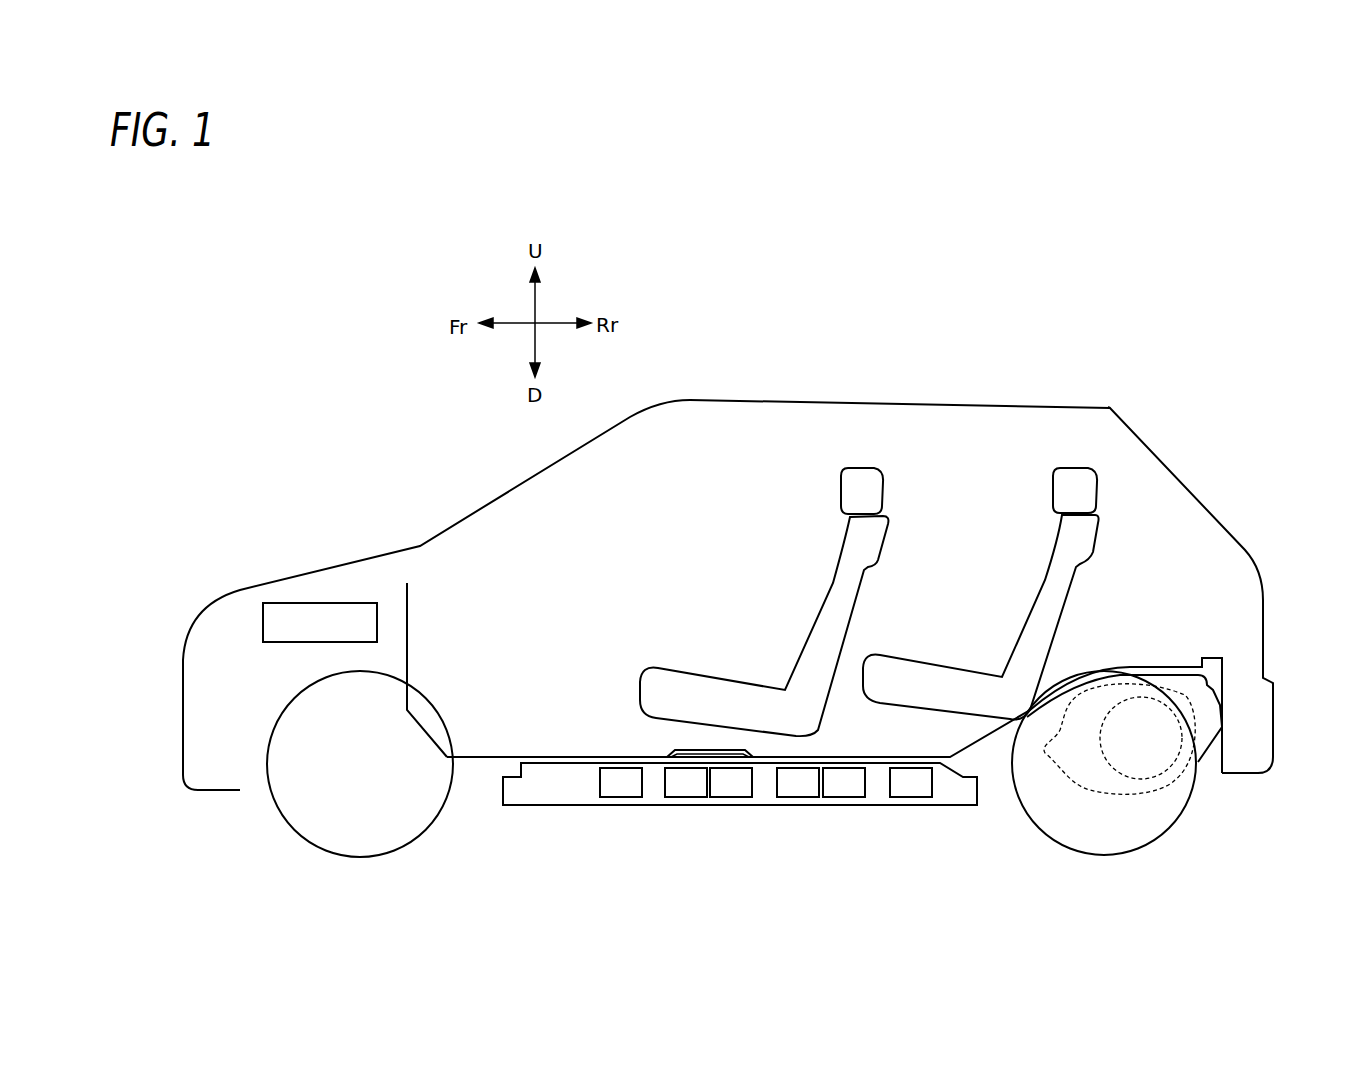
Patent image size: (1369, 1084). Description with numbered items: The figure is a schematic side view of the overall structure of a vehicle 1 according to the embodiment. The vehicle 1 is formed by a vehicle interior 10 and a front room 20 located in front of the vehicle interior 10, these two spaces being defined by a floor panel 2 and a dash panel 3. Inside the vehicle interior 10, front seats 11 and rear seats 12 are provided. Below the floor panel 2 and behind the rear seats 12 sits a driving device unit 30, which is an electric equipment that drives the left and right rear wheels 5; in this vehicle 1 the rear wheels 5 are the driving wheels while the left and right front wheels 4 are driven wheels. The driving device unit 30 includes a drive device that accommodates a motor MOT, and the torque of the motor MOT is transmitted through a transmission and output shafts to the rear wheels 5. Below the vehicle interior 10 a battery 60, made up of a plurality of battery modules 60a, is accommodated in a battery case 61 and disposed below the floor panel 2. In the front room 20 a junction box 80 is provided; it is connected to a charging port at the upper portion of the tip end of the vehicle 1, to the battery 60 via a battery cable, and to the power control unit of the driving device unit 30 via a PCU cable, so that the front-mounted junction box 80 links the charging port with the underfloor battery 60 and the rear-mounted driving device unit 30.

The vehicle 1 is at (404, 400).
The floor panel 2 is at (503, 757).
The dash panel 3 is at (408, 618).
The front wheel 4 is at (437, 820).
The rear wheel 5 is at (1177, 818).
The vehicle interior 10 is at (733, 505).
The front seat 11 is at (825, 587).
The rear seat 12 is at (1042, 583).
The front room 20 is at (370, 589).
The driving device unit 30 is at (1217, 745).
The battery 60 is at (740, 818).
The battery module 60a is at (840, 787).
The battery case 61 is at (877, 806).
The junction box 80 is at (293, 616).
The motor MOT is at (1147, 787).